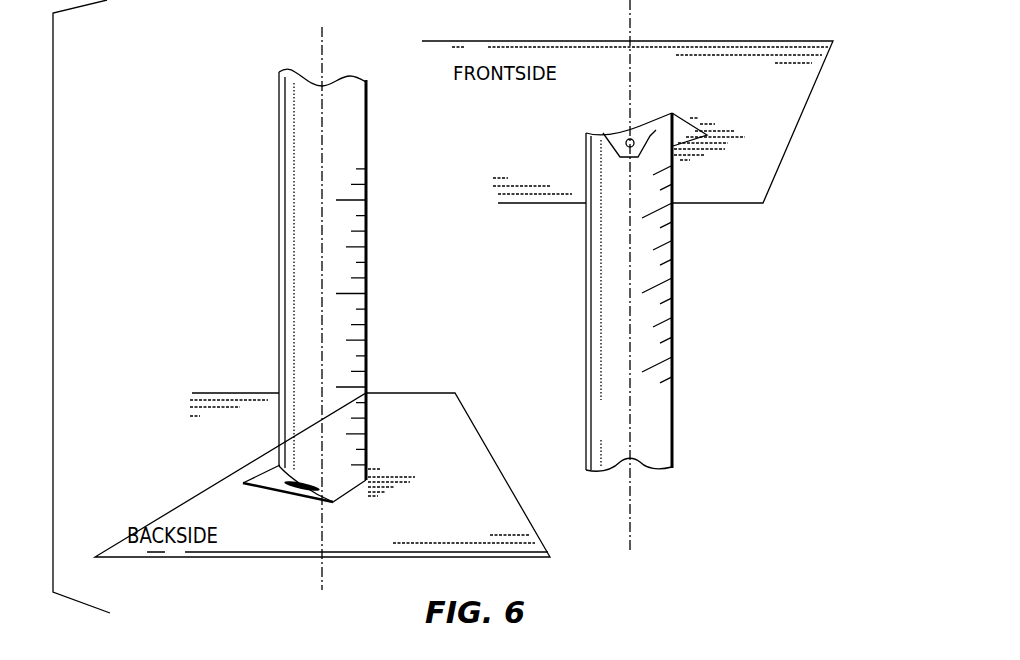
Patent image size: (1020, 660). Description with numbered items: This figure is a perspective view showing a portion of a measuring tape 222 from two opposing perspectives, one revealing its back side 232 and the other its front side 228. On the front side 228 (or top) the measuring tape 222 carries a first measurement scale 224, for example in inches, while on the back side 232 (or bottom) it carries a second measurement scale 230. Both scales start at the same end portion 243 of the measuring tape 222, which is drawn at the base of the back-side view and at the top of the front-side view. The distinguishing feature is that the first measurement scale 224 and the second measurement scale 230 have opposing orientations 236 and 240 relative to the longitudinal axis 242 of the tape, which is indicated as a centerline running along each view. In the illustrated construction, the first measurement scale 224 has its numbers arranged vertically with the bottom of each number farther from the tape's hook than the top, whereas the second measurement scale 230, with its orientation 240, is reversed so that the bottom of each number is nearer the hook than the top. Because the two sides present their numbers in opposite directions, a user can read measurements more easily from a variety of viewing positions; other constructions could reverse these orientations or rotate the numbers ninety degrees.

The measuring tape 222 is at (219, 213).
The back side 232 is at (307, 124).
The orientation of second measurement scale 240 is at (270, 317).
The second measurement scale 230 is at (320, 212).
The end portion 243 is at (280, 466).
The longitudinal axis 242 is at (323, 527).
The orientation of first measurement scale 236 is at (571, 284).
The first measurement scale 224 is at (619, 307).
The front side 228 is at (617, 409).